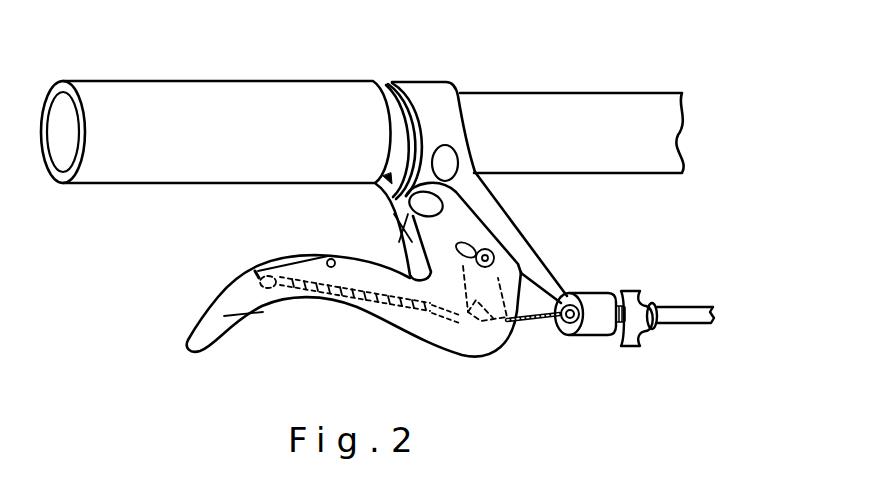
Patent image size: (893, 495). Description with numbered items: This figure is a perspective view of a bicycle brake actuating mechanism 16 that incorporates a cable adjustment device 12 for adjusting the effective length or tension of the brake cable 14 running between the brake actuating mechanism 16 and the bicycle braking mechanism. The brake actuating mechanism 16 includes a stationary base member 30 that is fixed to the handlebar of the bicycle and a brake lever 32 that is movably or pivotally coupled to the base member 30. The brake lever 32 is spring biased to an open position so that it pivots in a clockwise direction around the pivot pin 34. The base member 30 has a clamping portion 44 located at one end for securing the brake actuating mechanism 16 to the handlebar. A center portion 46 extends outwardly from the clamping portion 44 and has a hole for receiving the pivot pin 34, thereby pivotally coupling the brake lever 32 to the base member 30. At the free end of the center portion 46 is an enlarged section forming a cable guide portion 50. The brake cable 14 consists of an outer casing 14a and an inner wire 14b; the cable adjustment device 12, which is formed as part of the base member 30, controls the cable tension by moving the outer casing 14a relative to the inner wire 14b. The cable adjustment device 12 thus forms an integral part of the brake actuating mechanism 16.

The cable adjustment device 12 is at (692, 265).
The brake cable 14 is at (693, 327).
The outer casing 14a is at (693, 308).
The inner wire 14b is at (533, 323).
The brake actuating mechanism 16 is at (352, 342).
The base member 30 is at (524, 215).
The brake lever 32 is at (412, 341).
The pivot pin 34 is at (428, 198).
The clamping portion 44 is at (443, 82).
The center portion 46 is at (540, 248).
The cable guide portion 50 is at (594, 335).